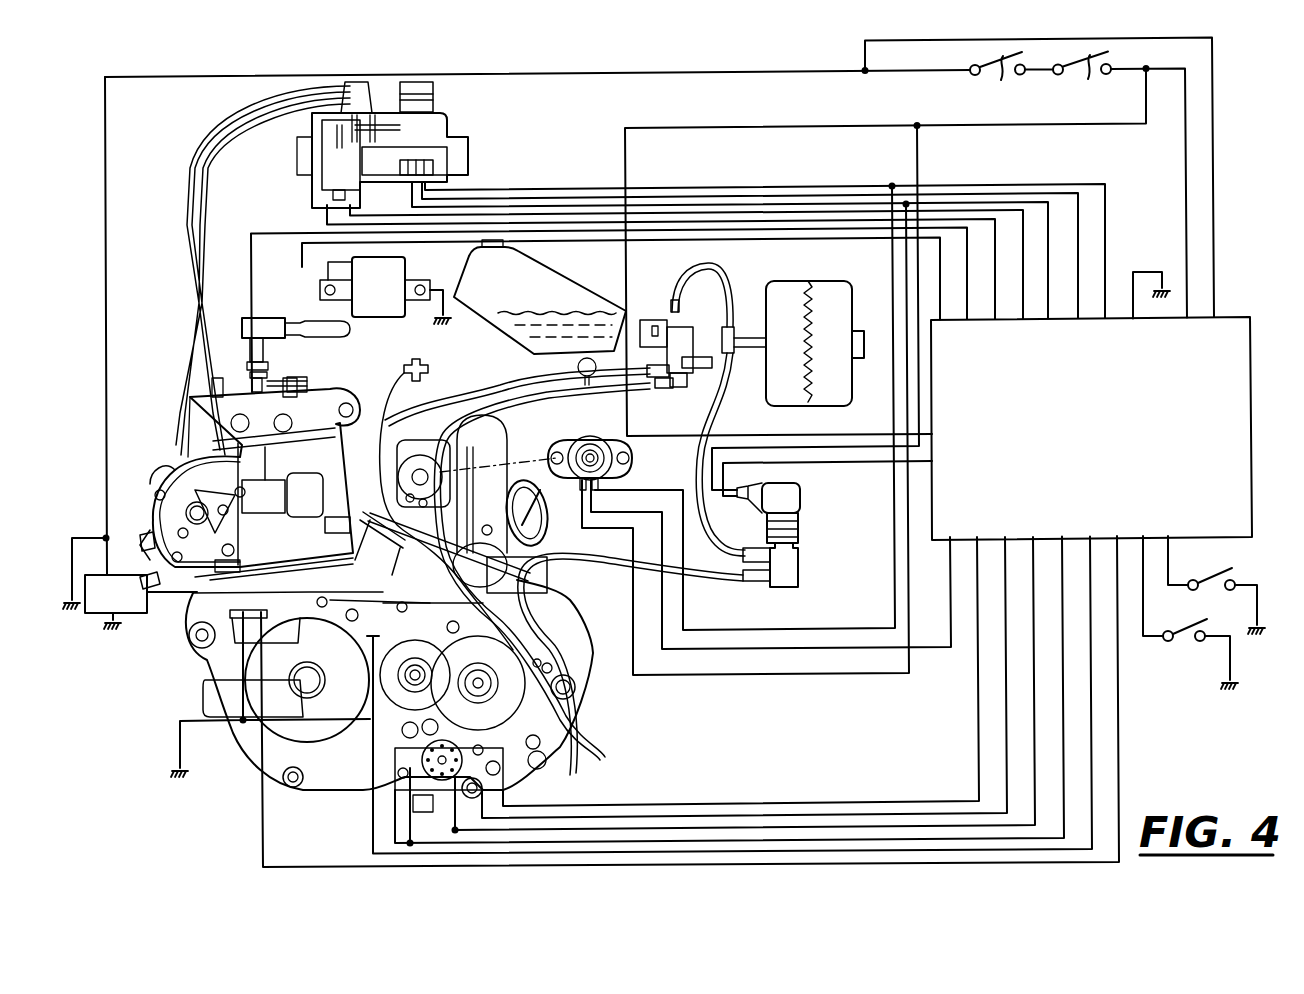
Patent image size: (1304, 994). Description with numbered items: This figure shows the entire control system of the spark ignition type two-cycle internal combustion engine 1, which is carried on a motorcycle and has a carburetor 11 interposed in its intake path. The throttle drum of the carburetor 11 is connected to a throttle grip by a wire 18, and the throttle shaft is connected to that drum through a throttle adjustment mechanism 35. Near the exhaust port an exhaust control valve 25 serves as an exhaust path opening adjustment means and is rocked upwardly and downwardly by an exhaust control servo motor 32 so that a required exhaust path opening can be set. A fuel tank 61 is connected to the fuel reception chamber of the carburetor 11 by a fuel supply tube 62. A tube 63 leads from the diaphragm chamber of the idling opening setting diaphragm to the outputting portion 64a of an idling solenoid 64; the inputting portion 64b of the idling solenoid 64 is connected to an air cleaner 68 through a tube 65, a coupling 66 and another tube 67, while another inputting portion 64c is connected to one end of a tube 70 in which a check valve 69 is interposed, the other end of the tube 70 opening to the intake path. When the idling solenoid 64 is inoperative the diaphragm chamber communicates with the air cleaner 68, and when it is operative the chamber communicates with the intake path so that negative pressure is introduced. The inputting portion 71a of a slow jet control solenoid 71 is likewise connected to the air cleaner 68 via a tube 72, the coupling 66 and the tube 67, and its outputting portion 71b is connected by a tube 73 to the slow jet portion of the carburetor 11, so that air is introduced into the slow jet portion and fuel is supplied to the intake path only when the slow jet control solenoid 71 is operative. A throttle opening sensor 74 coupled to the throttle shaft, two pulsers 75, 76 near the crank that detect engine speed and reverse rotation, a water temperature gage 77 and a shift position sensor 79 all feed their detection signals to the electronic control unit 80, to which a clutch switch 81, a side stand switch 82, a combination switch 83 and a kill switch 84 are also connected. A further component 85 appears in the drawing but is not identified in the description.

The spark ignition type 2-cycle internal combustion engine 1 is at (172, 366).
The carburetor 11 is at (535, 515).
The wire 18 is at (200, 170).
The exhaust control valve 25 is at (150, 484).
The exhaust control servo motor 32 is at (470, 135).
The throttle adjustment mechanism 35 is at (432, 390).
The fuel tank 61 is at (528, 275).
The fuel supply tube 62 is at (510, 367).
The tube 63 is at (533, 412).
The idling solenoid 64 is at (663, 335).
The outputting portion 64a is at (633, 327).
The inputting portion 64b is at (672, 300).
The inputting portion 64c is at (660, 390).
The tube 65 is at (703, 272).
The coupling 66 is at (731, 327).
The tube 67 is at (752, 350).
The air cleaner 68 is at (815, 281).
The check valve 69 is at (400, 377).
The tube 70 is at (420, 370).
The slow jet control solenoid 71 is at (800, 502).
The inputting portion 71a is at (755, 548).
The outputting portion 71b is at (757, 581).
The tube 72 is at (708, 418).
The tube 73 is at (603, 566).
The throttle opening sensor 74 is at (632, 466).
The pulser 75 is at (275, 627).
The pulser 76 is at (356, 642).
The water temperature gage 77 is at (241, 355).
The shift position sensor 79 is at (567, 790).
The electronic control unit 80 is at (1077, 445).
The clutch switch 81 is at (1236, 580).
The side stand switch 82 is at (1168, 642).
The combination switch 83 is at (997, 83).
The kill switch 84 is at (1082, 83).
The ignition coil 85 is at (395, 265).